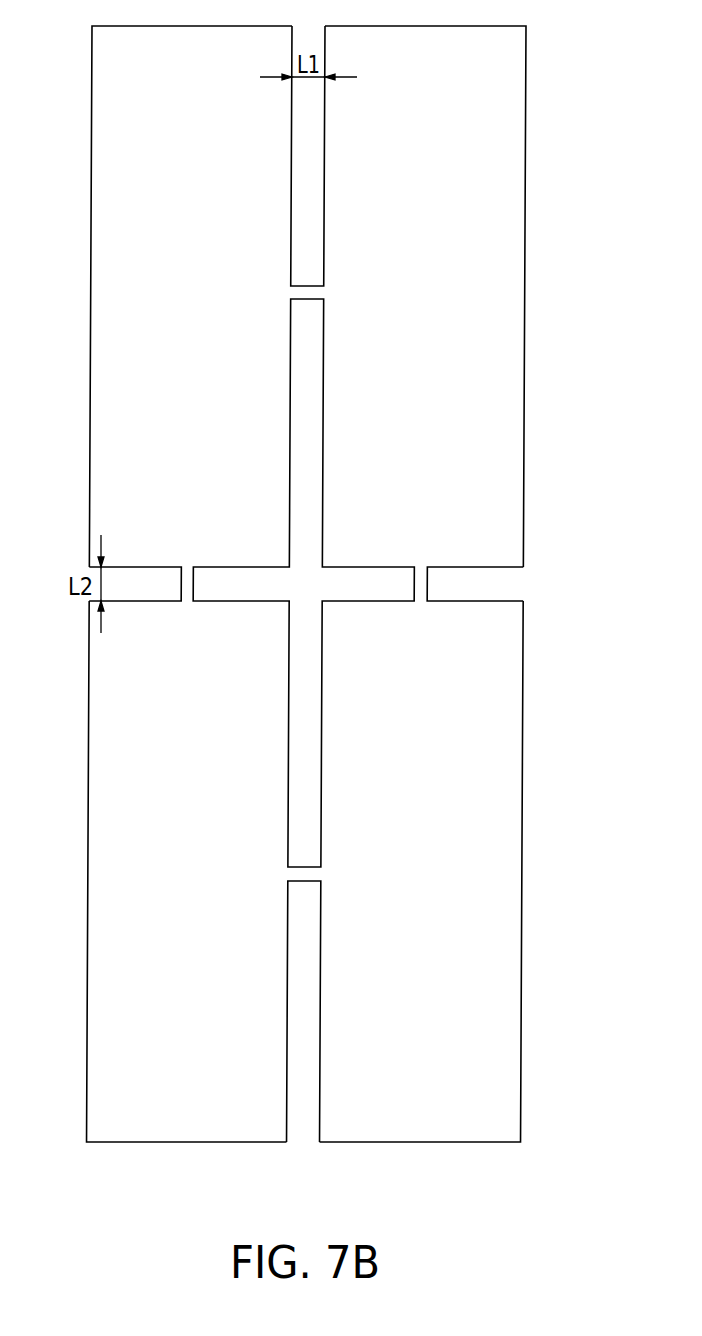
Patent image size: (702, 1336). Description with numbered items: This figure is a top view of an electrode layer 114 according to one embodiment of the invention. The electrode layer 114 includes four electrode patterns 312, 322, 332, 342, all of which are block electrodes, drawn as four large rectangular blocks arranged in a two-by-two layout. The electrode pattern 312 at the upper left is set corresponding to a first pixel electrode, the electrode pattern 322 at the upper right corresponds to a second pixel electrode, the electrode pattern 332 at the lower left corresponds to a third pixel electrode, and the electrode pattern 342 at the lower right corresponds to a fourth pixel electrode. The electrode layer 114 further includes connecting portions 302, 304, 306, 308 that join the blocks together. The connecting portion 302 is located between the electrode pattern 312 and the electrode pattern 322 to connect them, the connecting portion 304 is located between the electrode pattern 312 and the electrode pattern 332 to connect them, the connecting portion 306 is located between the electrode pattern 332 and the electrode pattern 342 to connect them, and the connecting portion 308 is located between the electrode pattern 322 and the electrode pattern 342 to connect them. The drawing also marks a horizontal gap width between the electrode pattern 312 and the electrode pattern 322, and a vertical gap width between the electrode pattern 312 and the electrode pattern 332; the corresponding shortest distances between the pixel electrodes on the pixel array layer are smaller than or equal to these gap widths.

The connecting portion 302 is at (305, 292).
The connecting portion 304 is at (188, 581).
The connecting portion 306 is at (304, 876).
The connecting portion 308 is at (425, 582).
The electrode pattern 312 is at (110, 193).
The electrode pattern 322 is at (503, 194).
The electrode pattern 332 is at (108, 752).
The electrode pattern 342 is at (500, 752).
The electrode layer 114 is at (569, 1194).